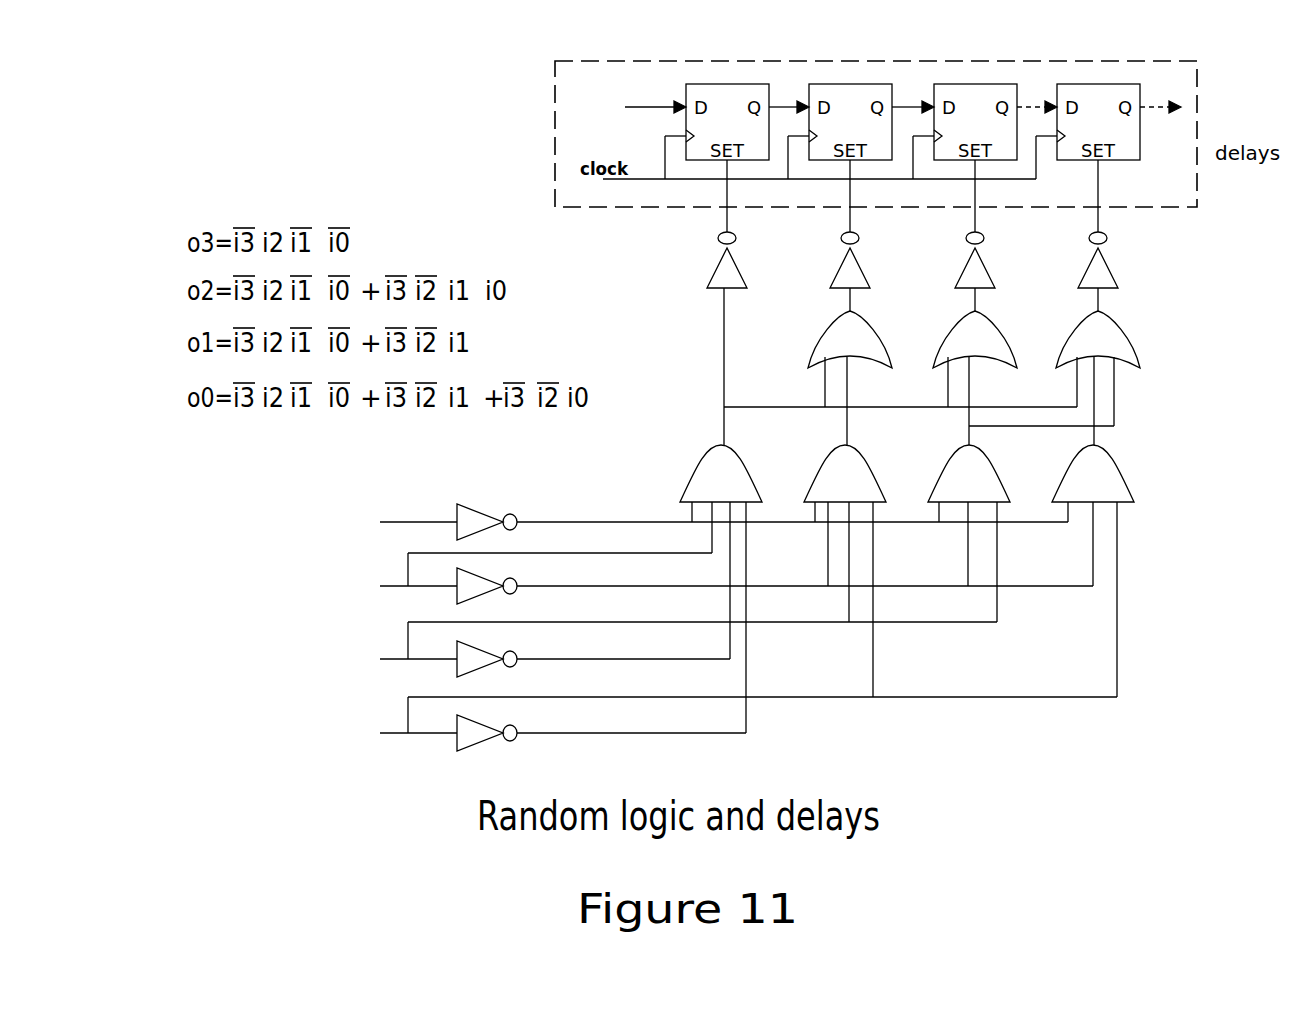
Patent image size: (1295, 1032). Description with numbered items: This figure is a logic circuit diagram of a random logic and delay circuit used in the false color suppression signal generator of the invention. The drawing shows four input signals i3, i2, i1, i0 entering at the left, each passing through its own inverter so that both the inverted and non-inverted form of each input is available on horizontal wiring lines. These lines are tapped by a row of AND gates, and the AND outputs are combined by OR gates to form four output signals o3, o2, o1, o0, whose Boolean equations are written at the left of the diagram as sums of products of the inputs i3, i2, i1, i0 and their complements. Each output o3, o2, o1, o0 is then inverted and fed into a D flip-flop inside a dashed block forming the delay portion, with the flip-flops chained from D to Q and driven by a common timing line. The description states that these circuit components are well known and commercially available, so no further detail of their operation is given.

The output o3 inverter and AND gate o3 is at (721, 367).
The output o2 inverter, OR gate and AND gate o2 is at (848, 367).
The output o1 inverter, OR gate and AND gate o1 is at (972, 367).
The output o0 inverter, OR gate and AND gate o0 is at (1096, 367).
The input i3 inverter i3 is at (703, 522).
The input i2 inverter i2 is at (715, 578).
The input i1 inverter i1 is at (667, 649).
The input i0 inverter i0 is at (727, 724).